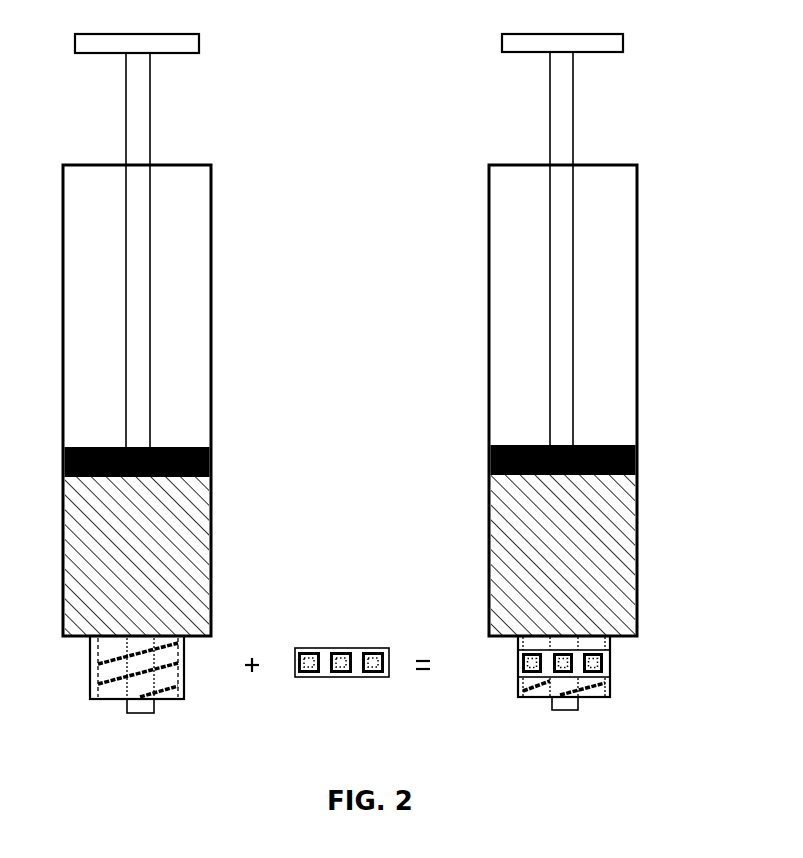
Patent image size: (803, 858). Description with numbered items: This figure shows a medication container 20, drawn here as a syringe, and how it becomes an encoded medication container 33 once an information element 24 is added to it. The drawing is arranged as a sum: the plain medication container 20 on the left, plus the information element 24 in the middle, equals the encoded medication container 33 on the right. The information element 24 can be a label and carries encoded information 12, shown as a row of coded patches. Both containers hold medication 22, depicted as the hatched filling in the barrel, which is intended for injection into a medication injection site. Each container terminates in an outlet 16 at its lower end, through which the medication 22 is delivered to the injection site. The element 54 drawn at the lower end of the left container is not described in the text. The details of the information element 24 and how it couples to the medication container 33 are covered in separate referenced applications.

The medication container 20 is at (211, 328).
The encoded medication container 33 is at (637, 335).
The medication 22 is at (150, 527).
The static mixer nozzle 54 is at (108, 687).
The outlet 16 is at (140, 713).
The information element 24 is at (327, 648).
The encoded information 12 is at (352, 665).